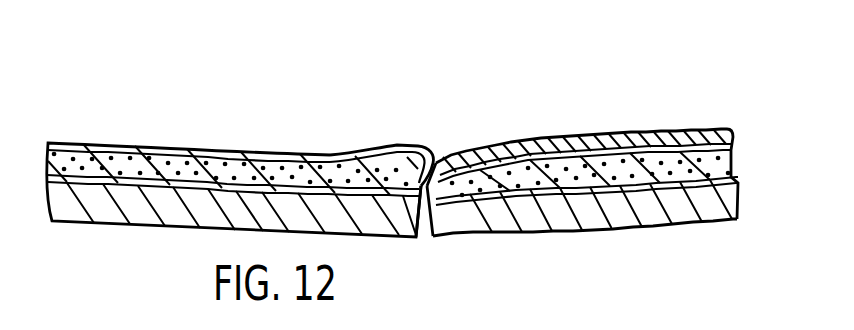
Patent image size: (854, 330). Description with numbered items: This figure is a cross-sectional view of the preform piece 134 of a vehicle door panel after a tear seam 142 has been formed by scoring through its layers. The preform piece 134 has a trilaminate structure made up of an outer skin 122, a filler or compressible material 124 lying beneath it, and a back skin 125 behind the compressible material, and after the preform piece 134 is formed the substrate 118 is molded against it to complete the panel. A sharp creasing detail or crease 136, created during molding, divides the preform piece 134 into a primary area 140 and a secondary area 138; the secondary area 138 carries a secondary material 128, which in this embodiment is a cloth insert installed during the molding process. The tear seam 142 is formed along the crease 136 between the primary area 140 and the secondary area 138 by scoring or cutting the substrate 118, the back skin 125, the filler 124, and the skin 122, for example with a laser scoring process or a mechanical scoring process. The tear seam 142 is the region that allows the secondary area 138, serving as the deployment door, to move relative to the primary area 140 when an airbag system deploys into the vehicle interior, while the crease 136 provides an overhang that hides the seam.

The substrate 118 is at (708, 212).
The skin 122 is at (188, 148).
The compressible material 124 is at (733, 160).
The back skin 125 is at (739, 180).
The secondary material 128 is at (663, 128).
The preform piece 134 is at (615, 149).
The crease 136 is at (411, 173).
The secondary area 138 is at (629, 84).
The primary area 140 is at (236, 133).
The tear seam 142 is at (427, 248).